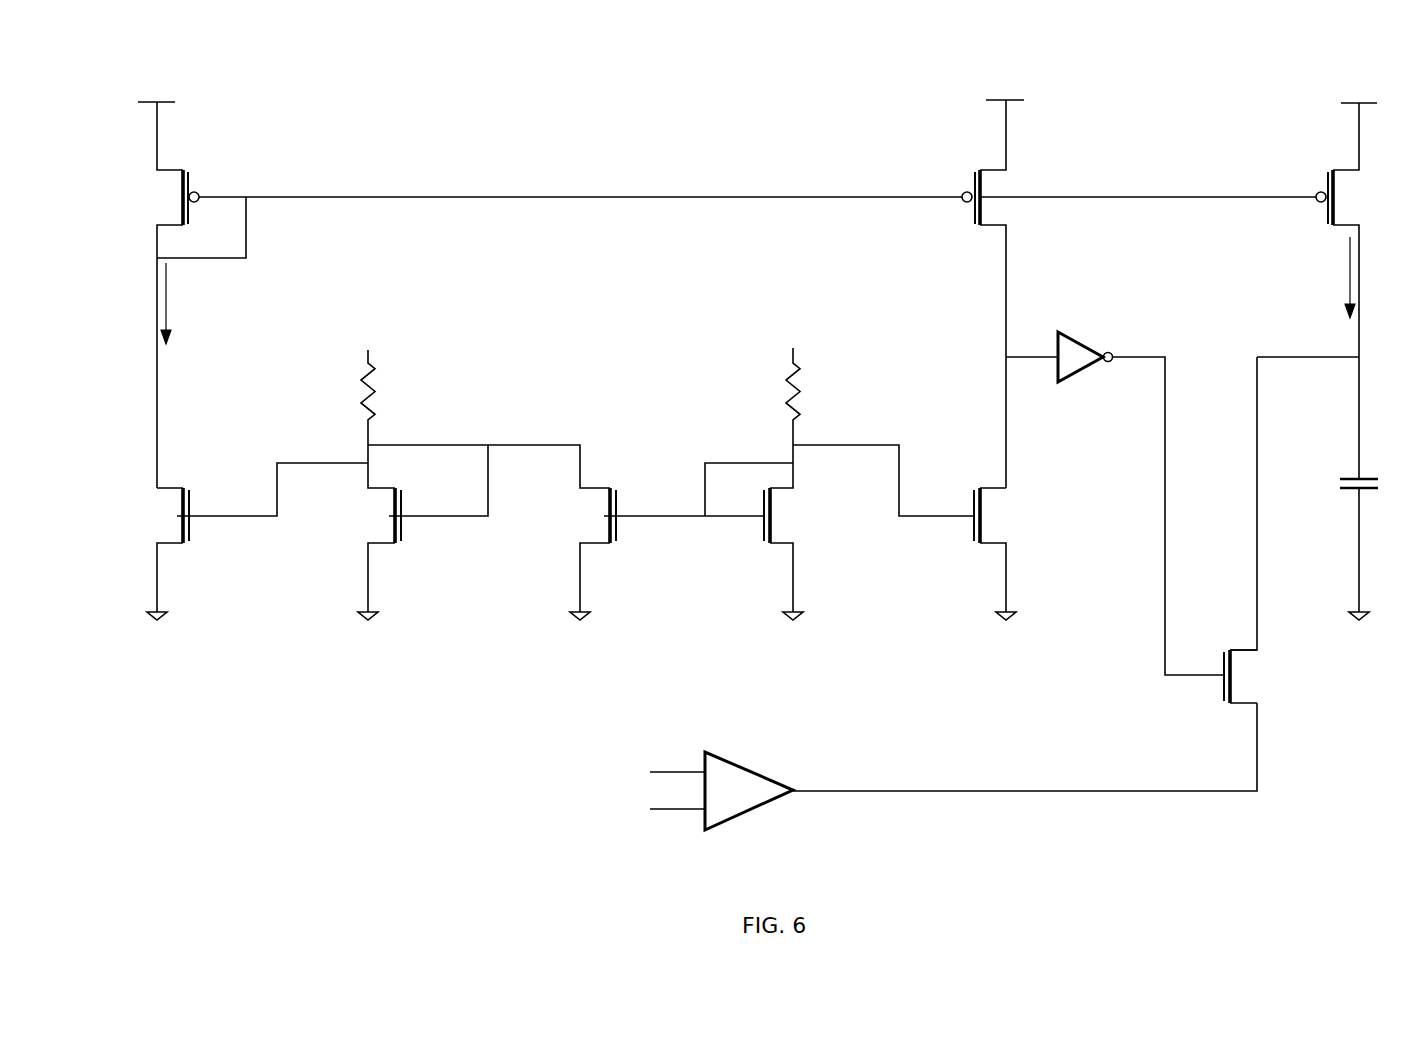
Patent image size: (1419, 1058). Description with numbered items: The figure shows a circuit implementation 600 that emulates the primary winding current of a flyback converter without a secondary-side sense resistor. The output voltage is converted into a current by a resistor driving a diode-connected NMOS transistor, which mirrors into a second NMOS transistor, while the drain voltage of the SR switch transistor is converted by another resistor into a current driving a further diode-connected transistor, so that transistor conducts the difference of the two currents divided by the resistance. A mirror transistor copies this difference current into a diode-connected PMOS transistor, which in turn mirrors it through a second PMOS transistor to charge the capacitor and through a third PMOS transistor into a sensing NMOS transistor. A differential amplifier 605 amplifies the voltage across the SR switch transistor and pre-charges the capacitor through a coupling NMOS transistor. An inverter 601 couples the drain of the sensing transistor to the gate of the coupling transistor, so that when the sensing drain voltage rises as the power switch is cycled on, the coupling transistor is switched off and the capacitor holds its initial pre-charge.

The circuit implementation 600 is at (756, 438).
The inverter 601 is at (1079, 371).
The differential amplifier 605 is at (761, 810).